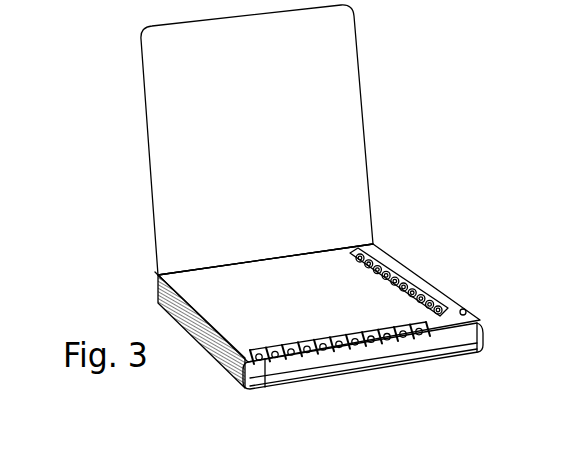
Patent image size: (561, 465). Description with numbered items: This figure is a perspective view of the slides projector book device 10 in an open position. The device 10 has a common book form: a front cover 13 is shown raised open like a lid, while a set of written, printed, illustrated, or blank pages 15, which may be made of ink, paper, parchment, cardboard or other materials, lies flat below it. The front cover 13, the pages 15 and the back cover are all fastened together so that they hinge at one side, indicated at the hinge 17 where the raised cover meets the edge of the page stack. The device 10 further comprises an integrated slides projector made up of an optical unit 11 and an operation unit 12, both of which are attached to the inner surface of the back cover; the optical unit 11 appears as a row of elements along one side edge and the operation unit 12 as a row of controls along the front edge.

The slides projector book device 10 is at (436, 223).
The optical unit 11 is at (443, 296).
The operation unit 12 is at (395, 333).
The front cover 13 is at (154, 142).
The pages 15 is at (212, 318).
The hinge 17 is at (158, 275).